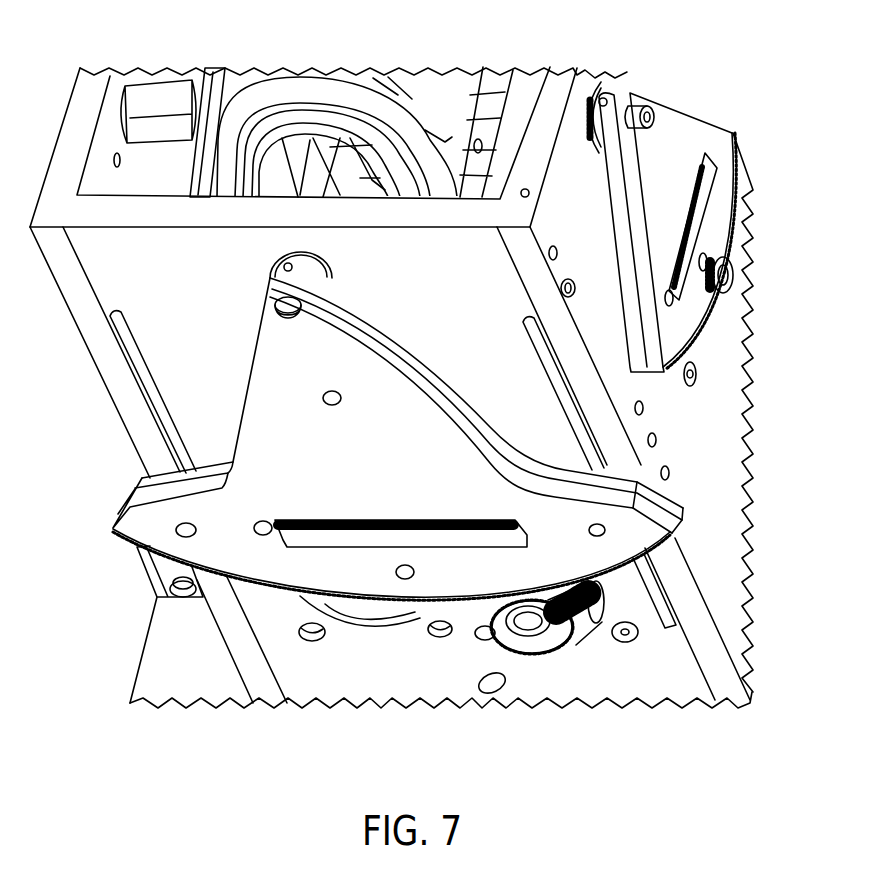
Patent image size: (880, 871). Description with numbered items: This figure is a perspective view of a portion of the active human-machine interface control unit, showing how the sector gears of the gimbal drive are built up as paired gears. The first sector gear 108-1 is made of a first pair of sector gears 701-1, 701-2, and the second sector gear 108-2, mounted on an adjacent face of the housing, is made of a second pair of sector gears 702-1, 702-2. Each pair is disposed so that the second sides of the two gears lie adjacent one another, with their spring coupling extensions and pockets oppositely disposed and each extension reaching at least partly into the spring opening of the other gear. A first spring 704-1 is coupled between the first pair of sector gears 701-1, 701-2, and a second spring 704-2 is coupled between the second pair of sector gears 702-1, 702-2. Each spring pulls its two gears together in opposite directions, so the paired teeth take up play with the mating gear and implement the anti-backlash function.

The first sector gear 108-1 is at (236, 329).
The second sector gear 108-2 is at (693, 190).
The first pair of sector gears 701-1 is at (430, 394).
The first pair of sector gears 701-2 is at (382, 336).
The second pair of sector gears 702-1 is at (622, 92).
The second pair of sector gears 702-2 is at (606, 97).
The first spring 704-1 is at (383, 520).
The second spring 704-2 is at (698, 190).